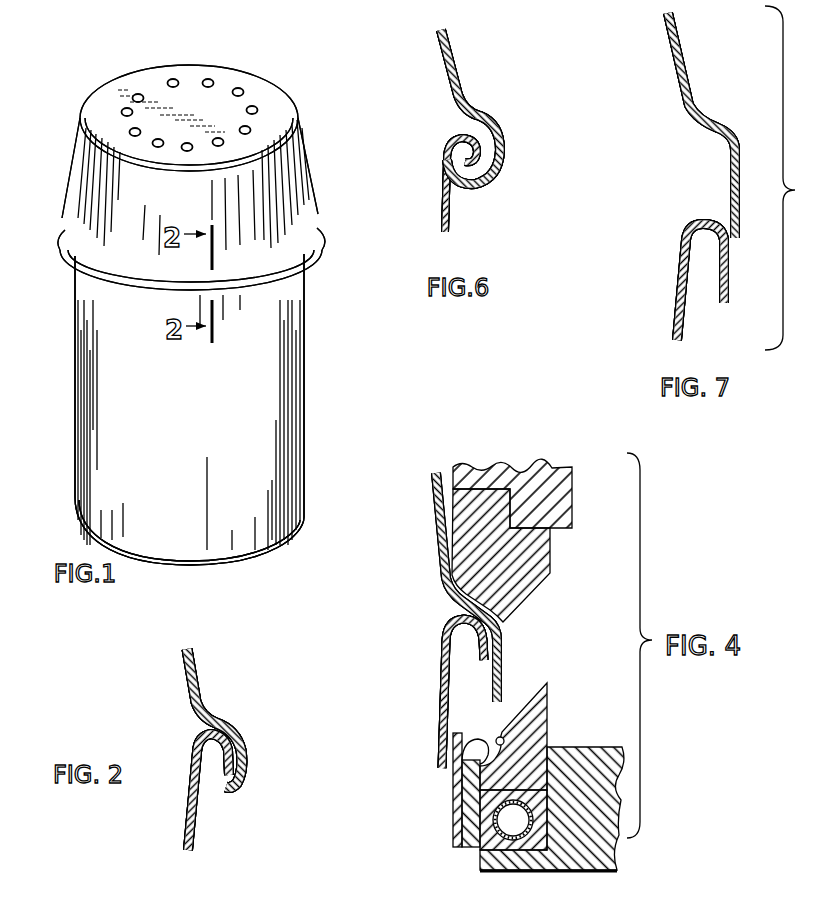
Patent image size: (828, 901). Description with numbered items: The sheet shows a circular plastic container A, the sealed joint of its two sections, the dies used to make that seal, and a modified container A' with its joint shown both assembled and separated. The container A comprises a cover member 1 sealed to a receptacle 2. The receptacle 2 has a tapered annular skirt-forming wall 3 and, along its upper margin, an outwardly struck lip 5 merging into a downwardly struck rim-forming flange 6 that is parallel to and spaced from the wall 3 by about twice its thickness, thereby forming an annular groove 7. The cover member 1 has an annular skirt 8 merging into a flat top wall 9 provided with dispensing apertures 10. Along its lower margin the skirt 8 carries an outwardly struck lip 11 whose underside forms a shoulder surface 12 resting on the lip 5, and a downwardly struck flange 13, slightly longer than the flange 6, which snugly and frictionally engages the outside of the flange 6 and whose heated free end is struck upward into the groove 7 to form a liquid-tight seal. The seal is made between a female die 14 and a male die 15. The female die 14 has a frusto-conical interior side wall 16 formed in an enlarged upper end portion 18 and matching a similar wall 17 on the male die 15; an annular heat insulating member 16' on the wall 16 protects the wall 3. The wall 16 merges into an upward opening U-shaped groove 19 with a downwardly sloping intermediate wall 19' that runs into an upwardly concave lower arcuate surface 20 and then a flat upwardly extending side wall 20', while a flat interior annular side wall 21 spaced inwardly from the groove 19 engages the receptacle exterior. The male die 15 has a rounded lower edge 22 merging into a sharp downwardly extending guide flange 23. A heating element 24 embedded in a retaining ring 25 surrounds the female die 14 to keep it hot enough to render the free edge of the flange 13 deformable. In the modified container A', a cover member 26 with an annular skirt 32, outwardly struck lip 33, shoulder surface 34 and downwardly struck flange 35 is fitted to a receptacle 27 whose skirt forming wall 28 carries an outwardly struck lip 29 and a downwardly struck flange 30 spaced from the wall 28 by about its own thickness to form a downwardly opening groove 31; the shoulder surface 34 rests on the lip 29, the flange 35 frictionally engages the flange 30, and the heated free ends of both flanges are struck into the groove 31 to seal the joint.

In FIG. 1, the cover member 1 is at (259, 75).
In FIG. 2, the cover member 1 is at (181, 656).
In FIG. 4, the cover member 1 is at (430, 481).
In FIG. 1, the receptacle 2 is at (306, 440).
In FIG. 2, the receptacle 2 is at (185, 829).
In FIG. 4, the receptacle 2 is at (436, 696).
In FIG. 1, the skirt-forming wall 3 is at (74, 438).
In FIG. 2, the skirt-forming wall 3 is at (195, 850).
In FIG. 4, the skirt-forming wall 3 is at (437, 724).
In FIG. 2, the outwardly struck lip 5 is at (206, 731).
In FIG. 4, the outwardly struck lip 5 is at (448, 616).
In FIG. 2, the rim-forming flange 6 is at (241, 783).
In FIG. 4, the rim-forming flange 6 is at (492, 661).
In FIG. 2, the annular groove 7 is at (212, 749).
In FIG. 4, the annular groove 7 is at (466, 637).
In FIG. 1, the annular skirt 8 is at (297, 175).
In FIG. 2, the annular skirt 8 is at (199, 678).
In FIG. 4, the annular skirt 8 is at (438, 521).
In FIG. 1, the top wall 9 is at (270, 103).
In FIG. 1, the dispensing apertures 10 is at (238, 89).
In FIG. 1, the outwardly struck lip 11 is at (312, 213).
In FIG. 2, the outwardly struck lip 11 is at (213, 717).
In FIG. 1, the annular shoulder surface 12 is at (61, 236).
In FIG. 2, the annular shoulder surface 12 is at (242, 735).
In FIG. 2, the rim forming flange 13 is at (246, 762).
In FIG. 4, the rim forming flange 13 is at (491, 681).
In FIG. 4, the female die 14 is at (551, 706).
In FIG. 4, the male die 15 is at (556, 546).
In FIG. 4, the interior side wall 16 is at (557, 670).
In FIG. 4, the heat insulating member 16' is at (419, 807).
In FIG. 4, the wall 17 is at (551, 596).
In FIG. 4, the enlarged upper end portion 18 is at (550, 723).
In FIG. 4, the U-shaped groove 19 is at (433, 733).
In FIG. 4, the intermediate wall 19' is at (553, 737).
In FIG. 4, the lower arcuate surface 20 is at (429, 803).
In FIG. 4, the flat side wall 20' is at (414, 758).
In FIG. 4, the interior annular side wall 21 is at (453, 831).
In FIG. 4, the rounded lower edge 22 is at (500, 614).
In FIG. 4, the guide flange 23 is at (503, 633).
In FIG. 4, the heating element 24 is at (514, 849).
In FIG. 4, the retaining ring 25 is at (562, 858).
In FIG. 6, the cover member 26 is at (431, 40).
In FIG. 7, the cover member 26 is at (671, 44).
In FIG. 6, the receptacle 27 is at (452, 211).
In FIG. 7, the receptacle 27 is at (672, 303).
In FIG. 6, the skirt forming wall 28 is at (441, 207).
In FIG. 7, the skirt forming wall 28 is at (674, 331).
In FIG. 6, the outwardly struck lip 29 is at (455, 128).
In FIG. 7, the outwardly struck lip 29 is at (700, 220).
In FIG. 6, the rim forming flange 30 is at (465, 160).
In FIG. 7, the rim forming flange 30 is at (730, 293).
In FIG. 6, the annular groove 31 is at (458, 142).
In FIG. 7, the annular groove 31 is at (708, 254).
In FIG. 6, the annular skirt 32 is at (443, 69).
In FIG. 7, the annular skirt 32 is at (682, 80).
In FIG. 6, the outwardly struck lip 33 is at (478, 118).
In FIG. 7, the outwardly struck lip 33 is at (717, 120).
In FIG. 6, the annular shoulder surface 34 is at (505, 144).
In FIG. 7, the annular shoulder surface 34 is at (724, 137).
In FIG. 6, the rim forming flange 35 is at (490, 185).
In FIG. 7, the rim forming flange 35 is at (730, 179).
In FIG. 1, the plastic container A is at (90, 37).
In FIG. 2, the plastic container A is at (283, 663).
In FIG. 4, the plastic container A is at (397, 555).
In FIG. 6, the closure assembly of second embodiment A' is at (507, 34).
In FIG. 7, the closure assembly of second embodiment A' is at (616, 20).